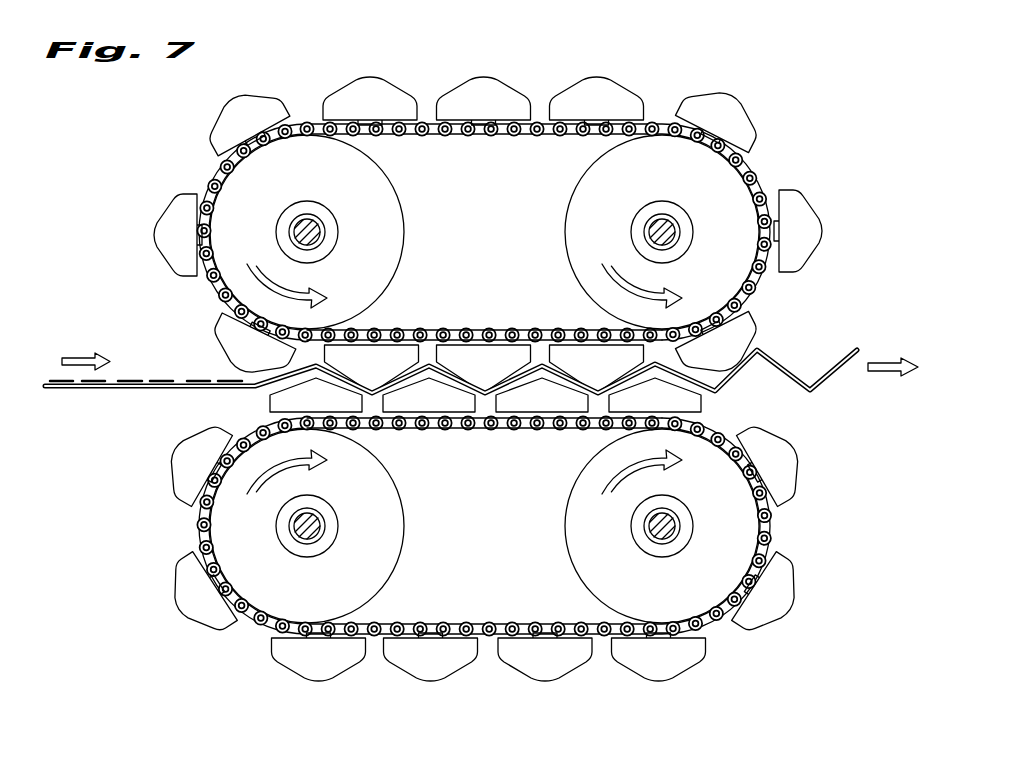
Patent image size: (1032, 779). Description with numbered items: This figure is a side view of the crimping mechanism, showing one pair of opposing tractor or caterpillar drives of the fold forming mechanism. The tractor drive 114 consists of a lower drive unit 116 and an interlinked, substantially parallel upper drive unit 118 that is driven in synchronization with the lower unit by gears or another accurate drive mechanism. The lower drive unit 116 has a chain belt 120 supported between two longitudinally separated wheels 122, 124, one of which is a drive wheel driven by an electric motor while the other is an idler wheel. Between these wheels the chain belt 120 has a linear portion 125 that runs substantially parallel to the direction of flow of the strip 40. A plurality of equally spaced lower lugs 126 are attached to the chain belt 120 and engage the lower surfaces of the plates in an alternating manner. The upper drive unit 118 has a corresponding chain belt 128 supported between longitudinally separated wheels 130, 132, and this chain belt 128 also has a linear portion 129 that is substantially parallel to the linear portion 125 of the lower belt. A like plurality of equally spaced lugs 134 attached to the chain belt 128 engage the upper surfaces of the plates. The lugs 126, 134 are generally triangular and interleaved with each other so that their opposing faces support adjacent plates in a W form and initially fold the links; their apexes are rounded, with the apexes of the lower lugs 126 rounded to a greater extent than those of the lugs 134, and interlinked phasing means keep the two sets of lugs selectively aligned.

The strip 40 is at (166, 381).
The tractor drive 114 is at (488, 368).
The lower drive unit 116 is at (486, 547).
The upper drive unit 118 is at (483, 206).
The chain belt 120 is at (512, 622).
The wheel 122 is at (385, 578).
The wheel 124 is at (592, 572).
The linear portion 125 is at (532, 430).
The lower lugs 126 is at (168, 478).
The chain belt 128 is at (490, 146).
The linear portion 129 is at (497, 322).
The wheel 130 is at (390, 198).
The wheel 132 is at (582, 177).
The lugs 134 is at (268, 95).